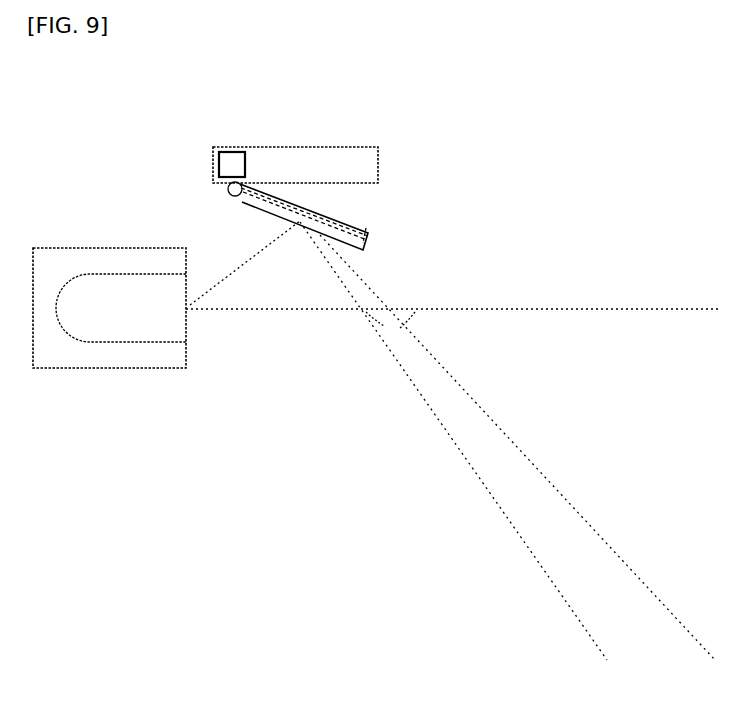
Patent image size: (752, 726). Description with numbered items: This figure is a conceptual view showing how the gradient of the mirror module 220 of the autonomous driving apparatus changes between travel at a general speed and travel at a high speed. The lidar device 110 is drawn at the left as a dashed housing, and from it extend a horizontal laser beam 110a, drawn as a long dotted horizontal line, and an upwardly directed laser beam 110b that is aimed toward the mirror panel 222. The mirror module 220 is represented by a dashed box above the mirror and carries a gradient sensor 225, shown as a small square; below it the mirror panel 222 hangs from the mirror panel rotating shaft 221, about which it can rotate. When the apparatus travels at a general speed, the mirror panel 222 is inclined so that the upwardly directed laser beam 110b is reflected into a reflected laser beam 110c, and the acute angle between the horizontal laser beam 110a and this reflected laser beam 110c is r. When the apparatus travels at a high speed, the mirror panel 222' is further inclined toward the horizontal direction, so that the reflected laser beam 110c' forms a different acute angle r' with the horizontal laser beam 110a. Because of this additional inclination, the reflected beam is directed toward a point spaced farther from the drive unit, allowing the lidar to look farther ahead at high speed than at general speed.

The lidar device 110 is at (81, 244).
The horizontal laser beam 110a is at (556, 308).
The upwardly directed laser beam 110b is at (240, 268).
The reflected laser beam 110c is at (453, 441).
The reflected laser beam 110c' is at (517, 447).
The mirror module 220 is at (297, 138).
The mirror panel rotating shaft 221 is at (228, 188).
The mirror panel 222 is at (332, 243).
The mirror panel 222' is at (336, 211).
The gradient sensor 225 is at (232, 149).